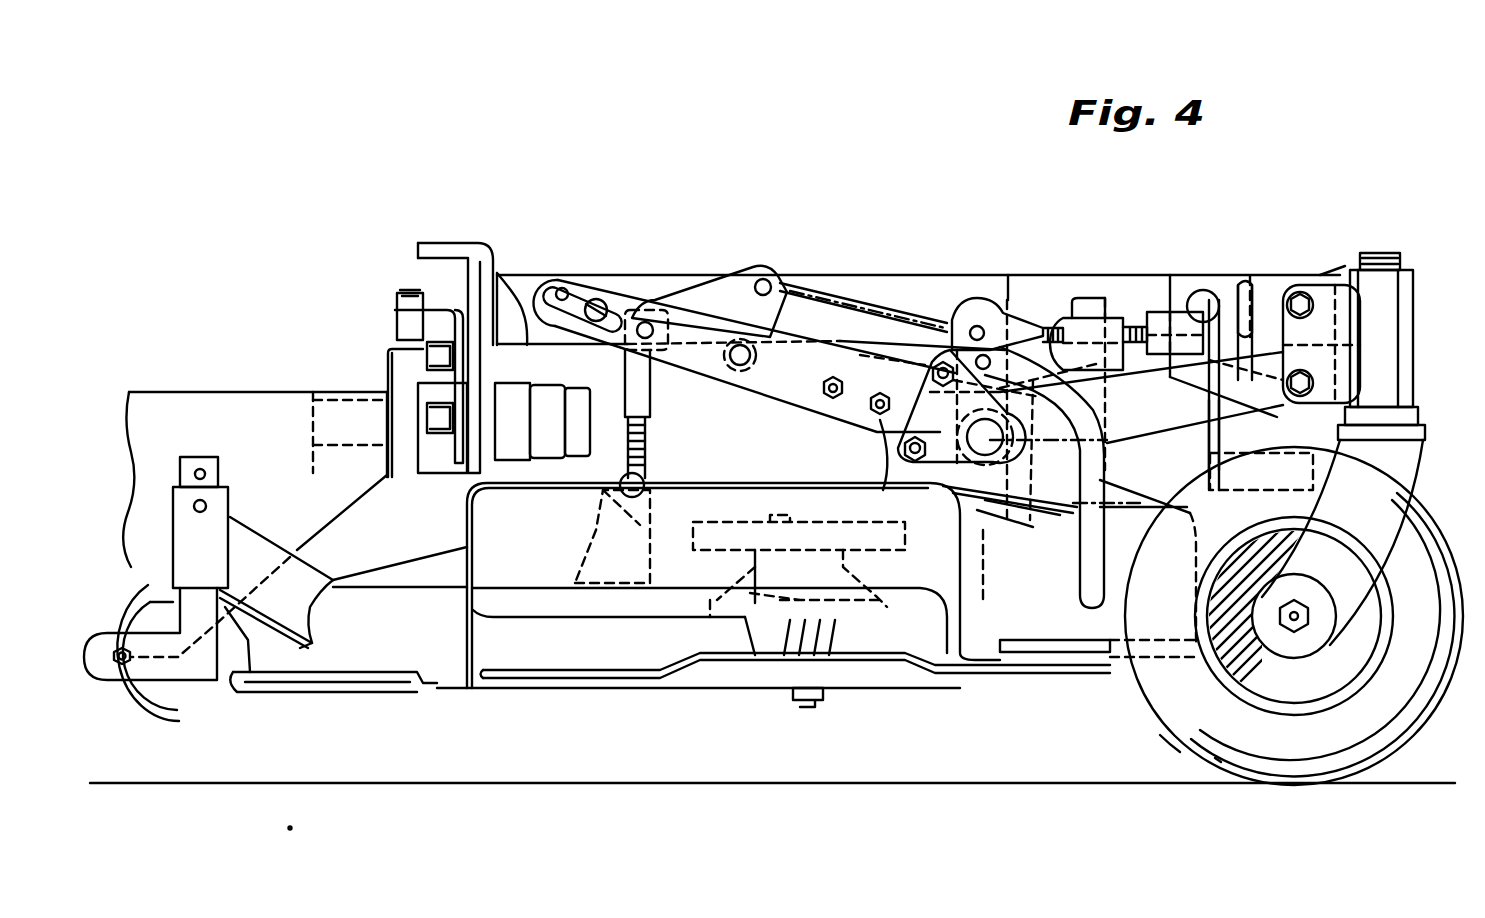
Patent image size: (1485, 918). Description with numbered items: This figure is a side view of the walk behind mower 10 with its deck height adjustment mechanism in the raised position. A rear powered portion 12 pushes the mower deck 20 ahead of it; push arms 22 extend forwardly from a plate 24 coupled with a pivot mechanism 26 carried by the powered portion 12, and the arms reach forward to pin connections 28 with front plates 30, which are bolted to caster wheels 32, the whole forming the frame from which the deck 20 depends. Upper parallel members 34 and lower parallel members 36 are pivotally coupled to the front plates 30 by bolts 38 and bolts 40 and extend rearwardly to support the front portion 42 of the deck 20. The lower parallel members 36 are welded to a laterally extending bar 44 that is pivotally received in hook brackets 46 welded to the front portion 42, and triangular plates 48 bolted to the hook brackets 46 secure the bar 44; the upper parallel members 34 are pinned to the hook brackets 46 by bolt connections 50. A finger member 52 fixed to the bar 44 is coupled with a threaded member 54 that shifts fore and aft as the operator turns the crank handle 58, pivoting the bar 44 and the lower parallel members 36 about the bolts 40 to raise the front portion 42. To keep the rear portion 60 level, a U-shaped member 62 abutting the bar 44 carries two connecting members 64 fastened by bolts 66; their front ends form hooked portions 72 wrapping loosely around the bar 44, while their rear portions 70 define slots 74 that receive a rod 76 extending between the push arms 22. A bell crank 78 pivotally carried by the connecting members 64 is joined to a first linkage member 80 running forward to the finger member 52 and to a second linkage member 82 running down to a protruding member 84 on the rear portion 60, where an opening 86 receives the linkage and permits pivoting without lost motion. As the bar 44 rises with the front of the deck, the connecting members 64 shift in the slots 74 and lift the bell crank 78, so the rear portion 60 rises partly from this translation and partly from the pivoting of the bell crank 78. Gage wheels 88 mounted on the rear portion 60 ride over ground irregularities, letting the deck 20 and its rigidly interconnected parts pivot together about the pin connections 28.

The walk behind mower 10 is at (518, 118).
The rear powered portion 12 is at (205, 408).
The mower deck 20 is at (980, 640).
The push arms 22 is at (500, 290).
The plate 24 is at (487, 250).
The pivot mechanism 26 is at (432, 485).
The pin connections 28 is at (1180, 312).
The front plates 30 is at (1220, 300).
The caster wheels 32 is at (1420, 732).
The upper parallel members 34 is at (1258, 288).
The lower parallel members 36 is at (1268, 389).
The bolts 38 is at (1302, 288).
The bolts 40 is at (1302, 384).
The front portion of the mower deck 42 is at (1092, 650).
The bar 44 is at (990, 437).
The hook brackets 46 is at (1085, 538).
The triangular plates 48 is at (872, 430).
The bolt connections 50 is at (1010, 300).
The finger member 52 is at (980, 290).
The threaded member 54 is at (1055, 320).
The crank handle 58 is at (1262, 492).
The rear portion of the deck 60 is at (434, 692).
The U-shaped member 62 is at (828, 396).
The connecting members 64 is at (750, 392).
The bolts 66 is at (873, 408).
The rear portions of the connecting members 70 is at (588, 278).
The hooked portions 72 is at (1005, 505).
The slots 74 is at (566, 278).
The rod 76 is at (606, 285).
The bell crank 78 is at (711, 275).
The first linkage member 80 is at (807, 278).
The second linkage member 82 is at (645, 447).
The protruding member 84 is at (580, 567).
The opening 86 is at (597, 523).
The gage wheels 88 is at (170, 703).